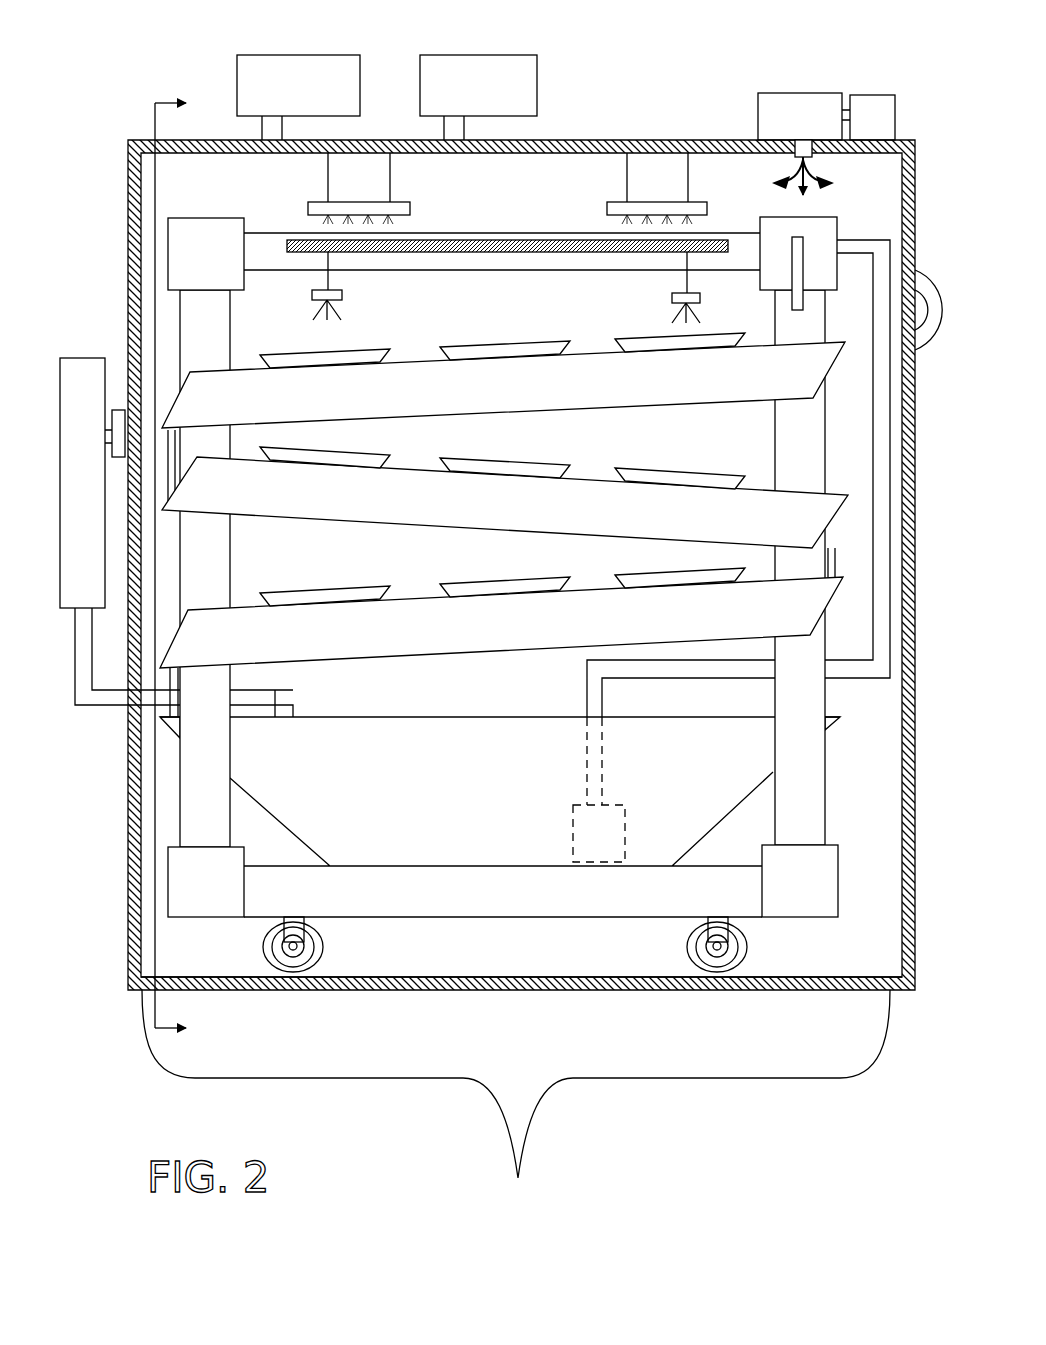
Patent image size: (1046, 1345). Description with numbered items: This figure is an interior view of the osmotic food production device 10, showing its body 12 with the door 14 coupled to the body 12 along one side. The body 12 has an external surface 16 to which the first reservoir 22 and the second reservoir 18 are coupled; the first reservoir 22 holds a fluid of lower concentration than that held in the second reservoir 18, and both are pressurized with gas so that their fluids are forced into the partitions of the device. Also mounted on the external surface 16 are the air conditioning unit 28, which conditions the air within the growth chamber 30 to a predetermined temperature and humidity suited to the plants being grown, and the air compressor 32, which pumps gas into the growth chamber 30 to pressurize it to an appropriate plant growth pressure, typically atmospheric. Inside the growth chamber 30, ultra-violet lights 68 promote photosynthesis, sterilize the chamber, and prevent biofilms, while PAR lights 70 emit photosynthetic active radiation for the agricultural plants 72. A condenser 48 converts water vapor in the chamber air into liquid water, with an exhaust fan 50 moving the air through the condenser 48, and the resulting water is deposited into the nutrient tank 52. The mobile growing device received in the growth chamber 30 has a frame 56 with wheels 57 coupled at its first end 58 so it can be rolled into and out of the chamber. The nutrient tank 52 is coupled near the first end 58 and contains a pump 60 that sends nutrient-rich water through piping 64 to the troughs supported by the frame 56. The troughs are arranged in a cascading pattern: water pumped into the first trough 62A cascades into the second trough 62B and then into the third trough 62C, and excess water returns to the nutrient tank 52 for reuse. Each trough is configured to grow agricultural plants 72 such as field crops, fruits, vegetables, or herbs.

The osmotic food production device 10 is at (118, 80).
The body 12 is at (915, 172).
The door 14 is at (932, 340).
The external surface 16 is at (514, 992).
The second reservoir 18 is at (478, 97).
The first reservoir 22 is at (298, 97).
The air conditioning unit 28 is at (800, 144).
The growth chamber 30 is at (516, 1101).
The air compressor 32 is at (868, 117).
The condenser 48 is at (176, 537).
The exhaust fan 50 is at (118, 410).
The nutrient tank 52 is at (356, 720).
The frame 56 is at (826, 786).
The wheels 57 is at (323, 945).
The first end 58 is at (172, 800).
The pump 60 is at (599, 790).
The first trough 62A is at (503, 385).
The second trough 62B is at (505, 502).
The third trough 62C is at (501, 622).
The piping 64 is at (872, 392).
The ultra-violet lights 68 is at (607, 202).
The PAR lights 70 is at (672, 294).
The agricultural plants 72 is at (455, 346).